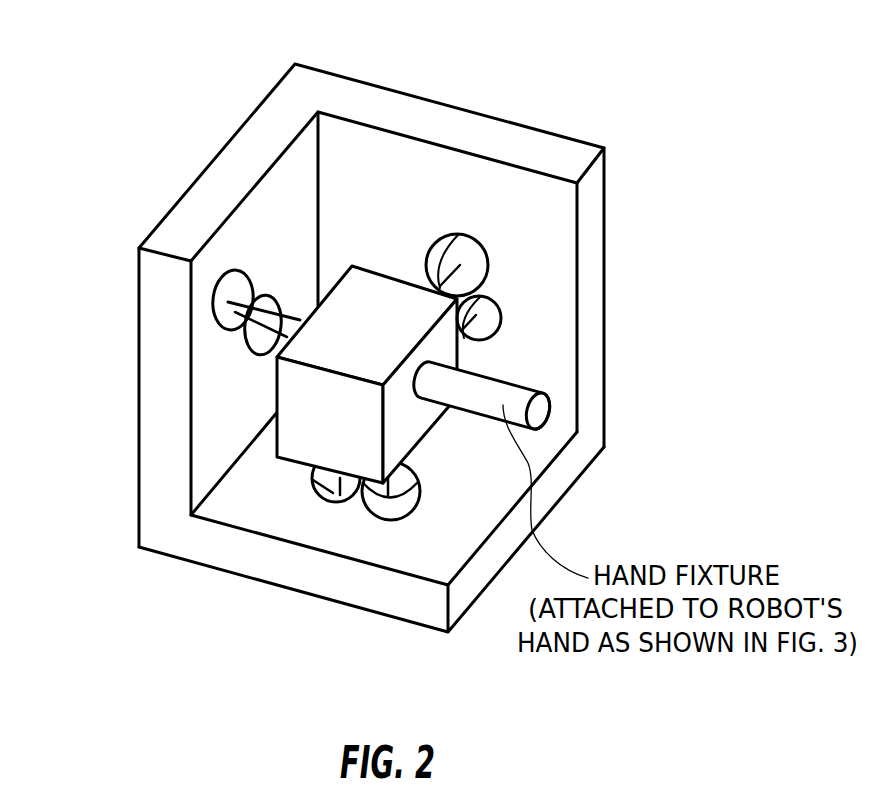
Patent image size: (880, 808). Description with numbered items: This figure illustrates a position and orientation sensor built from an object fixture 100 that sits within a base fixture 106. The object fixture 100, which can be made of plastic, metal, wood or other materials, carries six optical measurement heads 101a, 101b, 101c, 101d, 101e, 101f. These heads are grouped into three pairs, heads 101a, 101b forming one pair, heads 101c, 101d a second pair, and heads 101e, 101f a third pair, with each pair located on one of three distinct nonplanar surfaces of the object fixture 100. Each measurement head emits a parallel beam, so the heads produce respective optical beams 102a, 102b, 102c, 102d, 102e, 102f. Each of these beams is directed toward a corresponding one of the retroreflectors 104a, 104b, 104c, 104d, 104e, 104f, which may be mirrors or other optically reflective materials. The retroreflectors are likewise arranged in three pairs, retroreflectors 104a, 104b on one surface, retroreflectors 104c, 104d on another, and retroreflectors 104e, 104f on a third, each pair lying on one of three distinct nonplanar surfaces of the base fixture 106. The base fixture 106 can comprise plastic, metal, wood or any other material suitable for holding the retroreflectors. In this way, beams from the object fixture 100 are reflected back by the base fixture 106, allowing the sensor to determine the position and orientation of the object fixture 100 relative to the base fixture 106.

The object fixture 100 is at (367, 374).
The measurement head 101a is at (263, 357).
The measurement head 101b is at (302, 323).
The measurement head 101c is at (458, 236).
The measurement head 101d is at (600, 397).
The measurement head 101e is at (394, 478).
The measurement head 101f is at (314, 480).
The optical beam 102a is at (230, 335).
The optical beam 102b is at (277, 290).
The optical beam 102c is at (470, 272).
The optical beam 102d is at (475, 322).
The optical beam 102e is at (410, 500).
The optical beam 102f is at (322, 500).
The retroreflector 104a is at (213, 323).
The retroreflector 104b is at (280, 322).
The retroreflector 104c is at (475, 255).
The retroreflector 104d is at (468, 342).
The retroreflector 104e is at (392, 522).
The retroreflector 104f is at (351, 503).
The base fixture 106 is at (370, 100).